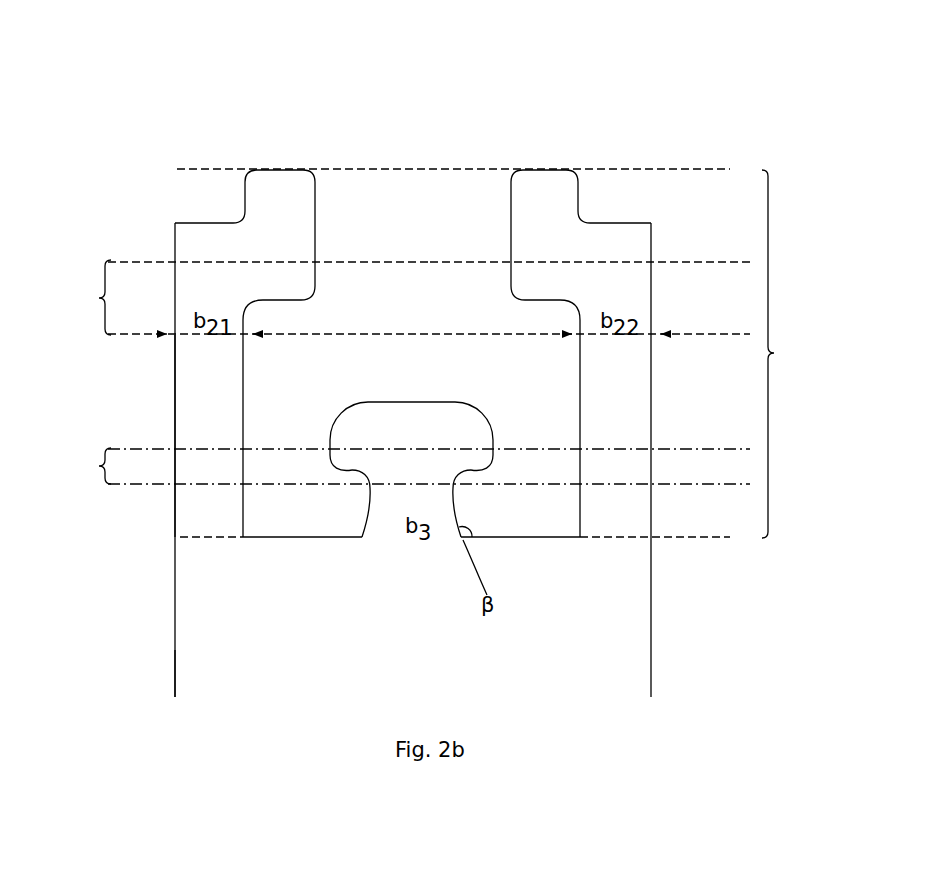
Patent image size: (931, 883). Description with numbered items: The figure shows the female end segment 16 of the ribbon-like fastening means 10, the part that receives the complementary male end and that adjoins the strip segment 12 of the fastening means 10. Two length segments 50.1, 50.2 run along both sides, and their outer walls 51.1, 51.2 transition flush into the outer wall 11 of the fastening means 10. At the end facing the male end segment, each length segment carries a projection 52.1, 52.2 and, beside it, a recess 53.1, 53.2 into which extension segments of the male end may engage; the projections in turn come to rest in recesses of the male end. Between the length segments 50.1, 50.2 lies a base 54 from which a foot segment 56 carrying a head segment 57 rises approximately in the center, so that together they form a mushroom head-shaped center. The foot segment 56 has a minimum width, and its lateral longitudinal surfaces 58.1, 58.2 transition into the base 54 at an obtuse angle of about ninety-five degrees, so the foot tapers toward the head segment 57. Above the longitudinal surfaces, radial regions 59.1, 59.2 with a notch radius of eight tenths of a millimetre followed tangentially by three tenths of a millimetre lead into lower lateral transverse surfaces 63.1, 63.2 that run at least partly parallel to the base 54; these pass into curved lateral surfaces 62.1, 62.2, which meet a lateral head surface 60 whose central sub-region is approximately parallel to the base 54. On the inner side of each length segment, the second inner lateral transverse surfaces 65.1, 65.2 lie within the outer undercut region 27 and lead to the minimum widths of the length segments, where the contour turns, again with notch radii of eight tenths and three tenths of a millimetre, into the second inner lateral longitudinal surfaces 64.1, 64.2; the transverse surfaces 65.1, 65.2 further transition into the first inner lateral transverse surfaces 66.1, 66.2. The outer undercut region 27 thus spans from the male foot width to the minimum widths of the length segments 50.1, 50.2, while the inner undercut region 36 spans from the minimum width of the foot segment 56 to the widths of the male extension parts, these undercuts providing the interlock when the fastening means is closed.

The fastening means 10 is at (662, 90).
The outer wall 11 is at (172, 620).
The strip segment 12 is at (185, 672).
The female end segment 16 is at (787, 354).
The outer undercut region 27 is at (413, 297).
The inner undercut region 36 is at (412, 466).
The length segment 50.1 is at (195, 400).
The length segment 50.2 is at (638, 505).
The outer wall 51.1 is at (172, 244).
The outer wall 51.2 is at (654, 244).
The projection 52.1 is at (286, 187).
The projection 52.2 is at (542, 185).
The recess 53.1 is at (205, 197).
The recess 53.2 is at (628, 195).
The base 54 is at (268, 530).
The foot segment 56 is at (448, 515).
The head segment 57 is at (472, 437).
The lateral longitudinal surface 58.1 is at (358, 516).
The lateral longitudinal surface 58.2 is at (463, 518).
The radial region 59.1 is at (367, 463).
The radial region 59.2 is at (453, 463).
The lateral head surface 60 is at (413, 398).
The curved lateral surface 62.1 is at (332, 433).
The curved lateral surface 62.2 is at (497, 433).
The lower lateral transverse surface 63.1 is at (483, 498).
The lower lateral transverse surface 63.2 is at (470, 473).
The second inner lateral longitudinal surface 64.1 is at (250, 386).
The second inner lateral longitudinal surface 64.2 is at (575, 353).
The second inner lateral transverse surface 65.1 is at (280, 305).
The second inner lateral transverse surface 65.2 is at (540, 303).
The first inner lateral transverse surface 66.1 is at (318, 236).
The first inner lateral transverse surface 66.2 is at (508, 215).